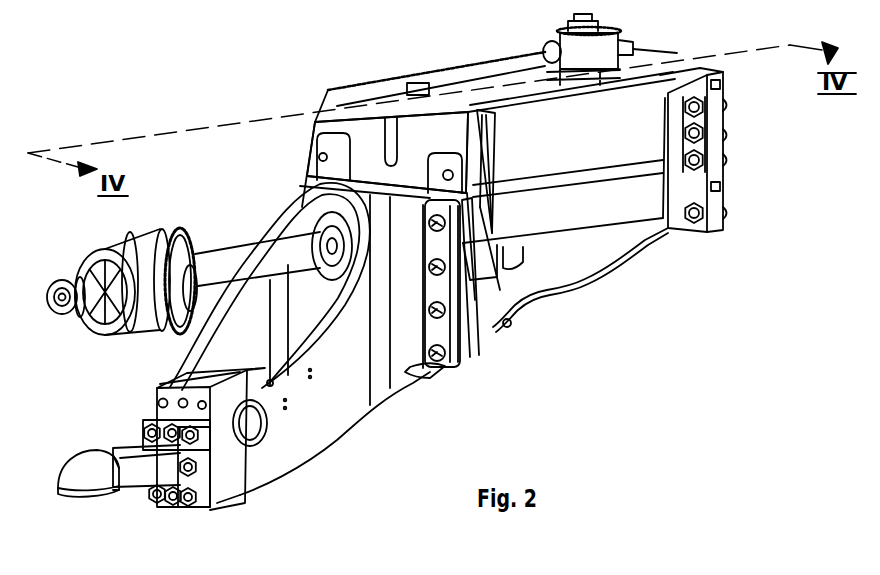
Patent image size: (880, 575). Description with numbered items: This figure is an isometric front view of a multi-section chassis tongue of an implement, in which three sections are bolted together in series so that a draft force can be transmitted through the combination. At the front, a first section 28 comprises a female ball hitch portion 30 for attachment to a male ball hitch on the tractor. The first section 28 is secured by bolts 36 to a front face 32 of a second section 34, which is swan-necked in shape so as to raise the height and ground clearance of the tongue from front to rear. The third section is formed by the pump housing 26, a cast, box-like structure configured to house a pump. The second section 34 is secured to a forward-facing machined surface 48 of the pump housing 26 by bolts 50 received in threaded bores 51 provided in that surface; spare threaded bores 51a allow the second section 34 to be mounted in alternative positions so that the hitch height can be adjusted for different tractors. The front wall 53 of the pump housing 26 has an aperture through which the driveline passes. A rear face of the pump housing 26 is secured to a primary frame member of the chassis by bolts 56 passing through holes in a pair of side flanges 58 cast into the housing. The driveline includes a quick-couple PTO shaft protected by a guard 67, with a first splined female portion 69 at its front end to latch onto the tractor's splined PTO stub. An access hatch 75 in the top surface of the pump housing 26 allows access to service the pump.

The pump housing 26 is at (576, 262).
The first section 28 is at (148, 473).
The female ball hitch portion 30 is at (75, 482).
The front face 32 is at (160, 412).
The second section 34 is at (336, 425).
The bolts 36 is at (203, 503).
The machined surface 48 is at (337, 152).
The bolts 50 is at (445, 350).
The threaded bores 51 is at (468, 325).
The spare threaded bores 51a is at (316, 157).
The front wall 53 is at (372, 143).
The bolts 56 is at (727, 100).
The side flanges 58 is at (705, 233).
The guard 67 is at (232, 253).
The first splined female portion 69 is at (56, 300).
The access hatch 75 is at (460, 92).